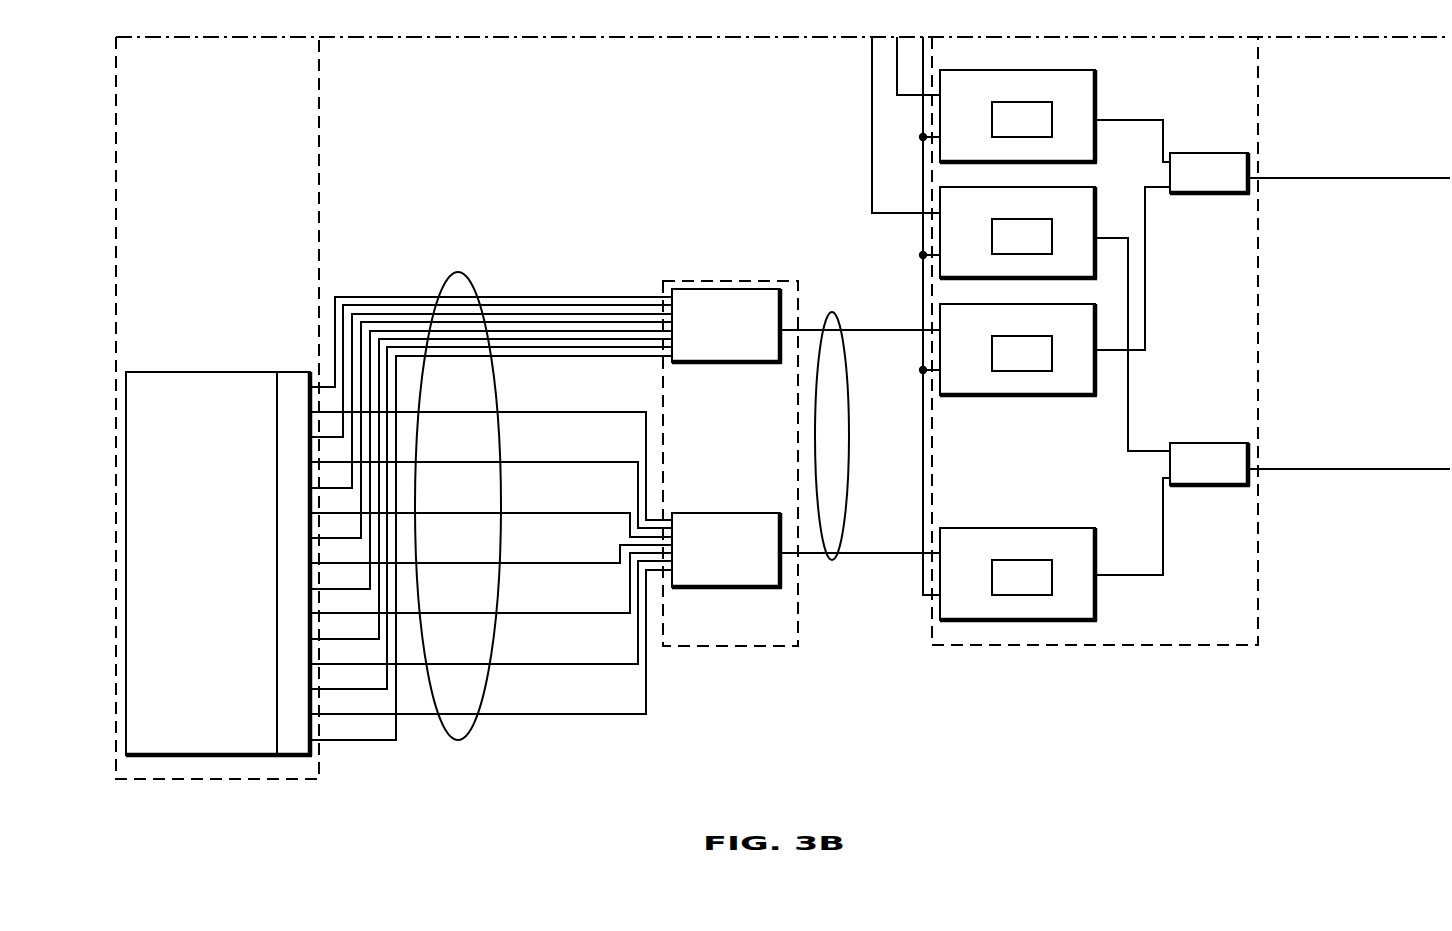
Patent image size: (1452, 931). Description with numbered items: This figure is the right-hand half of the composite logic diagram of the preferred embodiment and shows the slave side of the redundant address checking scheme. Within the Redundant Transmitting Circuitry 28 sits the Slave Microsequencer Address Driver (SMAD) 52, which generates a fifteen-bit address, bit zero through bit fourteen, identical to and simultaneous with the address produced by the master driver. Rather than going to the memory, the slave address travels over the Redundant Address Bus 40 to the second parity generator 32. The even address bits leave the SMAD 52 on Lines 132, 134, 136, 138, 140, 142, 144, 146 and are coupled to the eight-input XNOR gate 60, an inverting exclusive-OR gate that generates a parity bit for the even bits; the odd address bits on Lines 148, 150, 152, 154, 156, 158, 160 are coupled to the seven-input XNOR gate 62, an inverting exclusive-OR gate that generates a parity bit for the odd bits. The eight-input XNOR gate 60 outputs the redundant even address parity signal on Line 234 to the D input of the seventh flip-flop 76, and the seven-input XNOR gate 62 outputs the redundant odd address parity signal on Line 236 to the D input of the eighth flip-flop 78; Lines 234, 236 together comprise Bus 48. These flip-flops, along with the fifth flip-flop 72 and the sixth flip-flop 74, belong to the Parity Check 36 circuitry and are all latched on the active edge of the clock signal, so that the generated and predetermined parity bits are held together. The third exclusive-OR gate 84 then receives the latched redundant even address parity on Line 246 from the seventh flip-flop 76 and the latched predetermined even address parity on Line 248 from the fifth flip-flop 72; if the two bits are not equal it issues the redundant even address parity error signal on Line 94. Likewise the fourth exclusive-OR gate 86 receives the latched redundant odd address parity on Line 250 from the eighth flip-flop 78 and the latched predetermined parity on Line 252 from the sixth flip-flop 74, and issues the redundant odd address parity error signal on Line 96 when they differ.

The Redundant Transmitting Circuitry 28 is at (248, 408).
The Slave Microsequencer Address Driver (SMAD) 52 is at (219, 543).
The Line 132 is at (505, 318).
The Line 134 is at (491, 325).
The Line 136 is at (491, 364).
The Line 138 is at (491, 398).
The Line 140 is at (491, 414).
The Line 142 is at (491, 428).
The Line 144 is at (491, 442).
The Line 146 is at (491, 478).
The Line 148 is at (491, 447).
The Line 150 is at (491, 476).
The Line 152 is at (491, 506).
The Line 154 is at (491, 544).
The Line 156 is at (491, 583).
The Line 158 is at (491, 612).
The Line 160 is at (491, 642).
The Redundant Address Bus 40 is at (474, 518).
The Parity Generator 2 32 is at (730, 440).
The 8-Input XNOR-2 60 is at (727, 343).
The 7-Input XNOR-2 62 is at (727, 566).
The Line 234 is at (860, 359).
The Line 236 is at (860, 584).
The Bus 48 is at (843, 423).
The Parity Check 36 is at (1095, 363).
The FF-5 72 is at (1052, 104).
The FF-6 74 is at (1037, 222).
The FF-7 76 is at (1019, 370).
The FF-8 78 is at (1018, 551).
The Line 248 is at (1149, 121).
The Line 246 is at (1153, 268).
The Line 252 is at (1144, 344).
The Line 250 is at (1165, 526).
The XOR-3 84 is at (1210, 192).
The XOR-4 86 is at (1210, 483).
The Line 94 is at (1349, 160).
The Line 96 is at (1349, 451).